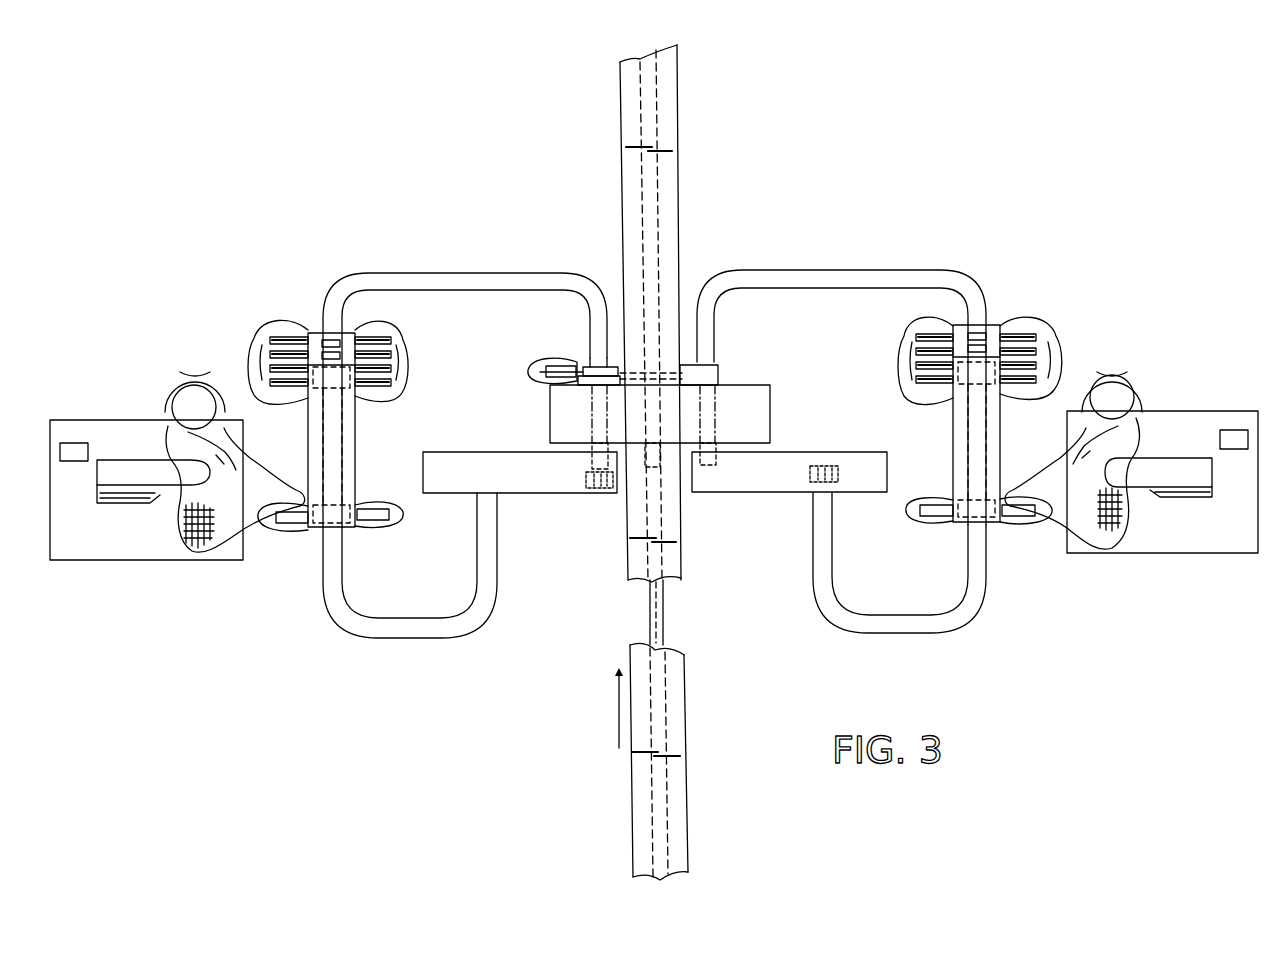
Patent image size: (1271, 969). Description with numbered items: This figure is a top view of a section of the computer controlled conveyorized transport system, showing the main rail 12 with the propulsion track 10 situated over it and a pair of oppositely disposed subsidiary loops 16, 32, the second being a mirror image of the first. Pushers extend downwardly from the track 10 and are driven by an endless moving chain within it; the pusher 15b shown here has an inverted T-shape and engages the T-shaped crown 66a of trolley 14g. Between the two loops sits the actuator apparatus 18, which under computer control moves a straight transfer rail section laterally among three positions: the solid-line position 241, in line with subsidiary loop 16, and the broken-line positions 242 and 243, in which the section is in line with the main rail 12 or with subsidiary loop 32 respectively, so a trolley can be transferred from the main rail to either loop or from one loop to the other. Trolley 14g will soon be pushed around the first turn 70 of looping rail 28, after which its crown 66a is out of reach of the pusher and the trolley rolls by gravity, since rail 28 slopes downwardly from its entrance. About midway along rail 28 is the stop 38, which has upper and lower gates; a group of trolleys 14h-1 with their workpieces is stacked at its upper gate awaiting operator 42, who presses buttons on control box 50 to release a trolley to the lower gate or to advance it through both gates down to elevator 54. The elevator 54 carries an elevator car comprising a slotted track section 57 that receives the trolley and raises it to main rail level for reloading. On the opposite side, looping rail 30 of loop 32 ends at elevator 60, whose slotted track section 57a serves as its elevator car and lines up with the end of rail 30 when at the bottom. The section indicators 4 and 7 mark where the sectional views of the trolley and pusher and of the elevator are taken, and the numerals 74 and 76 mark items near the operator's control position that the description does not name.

The propulsion track 10 is at (677, 682).
The main rail 12 is at (667, 608).
The subsidiary loop 16 is at (434, 262).
The looping rail 28 is at (523, 273).
The looping rail 30 is at (981, 553).
The subsidiary loop 32 is at (916, 260).
The stop 38 is at (346, 427).
The operator 42 is at (168, 380).
The control box 50 is at (76, 444).
The elevator 54 is at (543, 478).
The slotted track section 57 is at (590, 470).
The slotted track section 57a is at (812, 468).
The elevator 60 is at (727, 480).
The T-shaped crown 66a is at (592, 357).
The first turn 70 is at (573, 291).
The hand 74 is at (232, 513).
The clip 76 is at (294, 528).
The trolley 14g is at (530, 369).
The trolleys 14h-1 is at (400, 353).
The pusher 15b is at (686, 373).
The actuator apparatus 18 is at (750, 394).
The first position of transfer rail section 241 is at (592, 410).
The second position of transfer rail section 242 is at (645, 390).
The third position of transfer rail section 243 is at (718, 390).
The section line 4- 4 is at (547, 443).
The section line 7- 7 is at (515, 512).